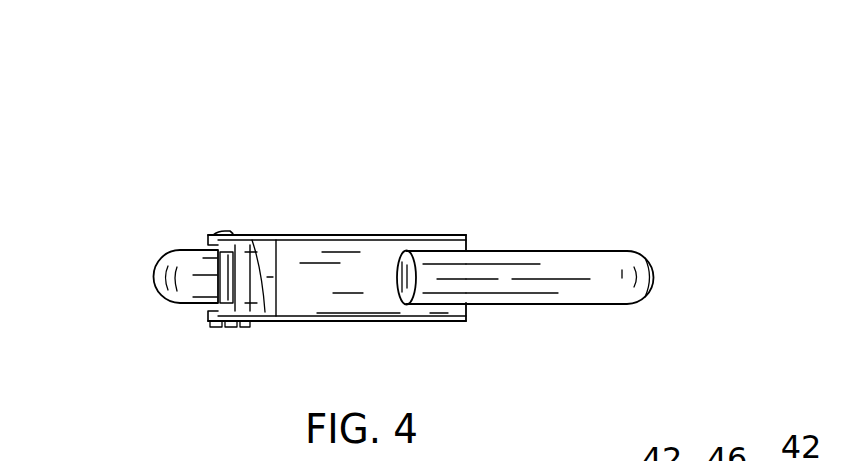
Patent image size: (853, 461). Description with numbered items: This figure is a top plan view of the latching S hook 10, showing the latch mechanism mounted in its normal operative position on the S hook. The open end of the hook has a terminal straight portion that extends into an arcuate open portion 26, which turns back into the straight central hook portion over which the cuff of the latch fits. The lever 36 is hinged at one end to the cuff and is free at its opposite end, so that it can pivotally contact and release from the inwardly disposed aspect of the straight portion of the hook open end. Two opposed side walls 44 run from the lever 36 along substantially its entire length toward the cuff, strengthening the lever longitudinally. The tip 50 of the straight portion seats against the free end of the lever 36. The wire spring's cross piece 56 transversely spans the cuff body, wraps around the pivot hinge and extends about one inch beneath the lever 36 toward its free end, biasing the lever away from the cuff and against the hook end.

The latching S hook 10 is at (517, 140).
The arcuate open portion 26 is at (650, 273).
The lever 36 is at (326, 277).
The side walls 44 is at (387, 235).
The tip 50 is at (430, 268).
The cross piece 56 is at (252, 240).